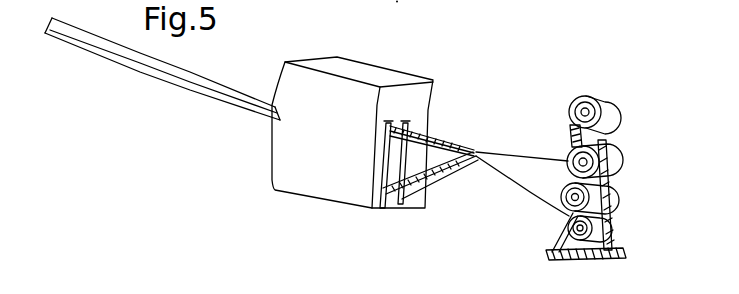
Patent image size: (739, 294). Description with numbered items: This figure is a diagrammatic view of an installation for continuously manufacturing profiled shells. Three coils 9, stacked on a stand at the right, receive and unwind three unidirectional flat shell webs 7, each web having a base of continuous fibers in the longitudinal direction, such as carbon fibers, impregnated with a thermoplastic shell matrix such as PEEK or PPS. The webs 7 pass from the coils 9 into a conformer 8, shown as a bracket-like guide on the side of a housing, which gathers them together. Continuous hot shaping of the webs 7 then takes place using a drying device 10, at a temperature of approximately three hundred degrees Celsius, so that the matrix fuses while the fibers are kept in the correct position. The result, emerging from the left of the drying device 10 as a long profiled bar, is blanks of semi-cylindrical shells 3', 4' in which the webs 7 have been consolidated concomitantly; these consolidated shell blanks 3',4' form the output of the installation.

The semi-cylindrical shells 3',4' is at (162, 87).
The semi-cylindrical shell 3' is at (162, 87).
The semi-cylindrical shell 4' is at (162, 87).
The drying device 10 is at (325, 198).
The conformer 8 is at (467, 134).
The unidirectional flat shell webs 7 is at (537, 179).
The coils 9 is at (619, 165).